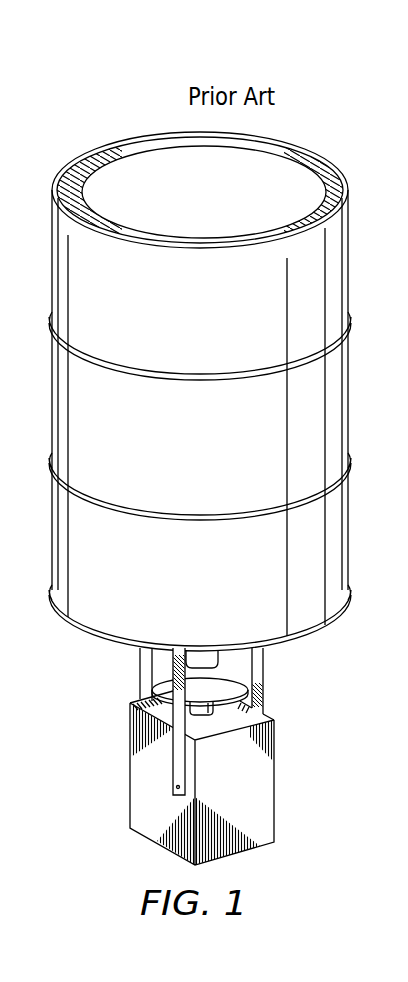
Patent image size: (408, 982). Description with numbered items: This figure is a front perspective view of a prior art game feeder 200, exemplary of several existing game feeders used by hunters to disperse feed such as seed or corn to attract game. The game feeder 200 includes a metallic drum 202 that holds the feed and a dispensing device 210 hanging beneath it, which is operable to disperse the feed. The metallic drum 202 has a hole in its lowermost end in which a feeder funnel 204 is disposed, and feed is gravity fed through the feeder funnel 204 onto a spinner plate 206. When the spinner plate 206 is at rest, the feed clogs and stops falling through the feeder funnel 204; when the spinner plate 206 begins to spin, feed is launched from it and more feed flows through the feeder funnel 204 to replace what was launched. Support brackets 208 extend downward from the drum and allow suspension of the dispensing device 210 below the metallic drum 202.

The game feeder 200 is at (93, 60).
The metallic drum 202 is at (222, 458).
The feeder funnel 204 is at (211, 653).
The spinner plate 206 is at (227, 683).
The support brackets 208 is at (140, 673).
The dispensing device 210 is at (297, 786).